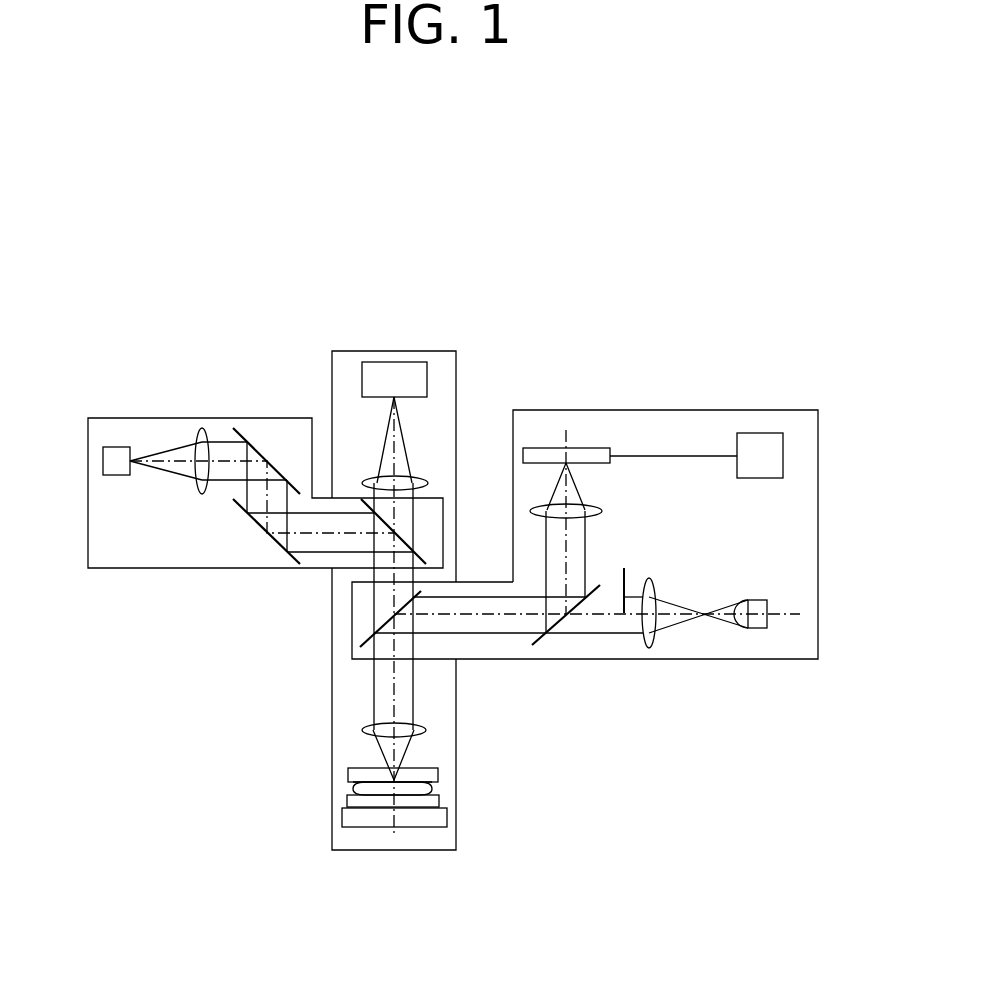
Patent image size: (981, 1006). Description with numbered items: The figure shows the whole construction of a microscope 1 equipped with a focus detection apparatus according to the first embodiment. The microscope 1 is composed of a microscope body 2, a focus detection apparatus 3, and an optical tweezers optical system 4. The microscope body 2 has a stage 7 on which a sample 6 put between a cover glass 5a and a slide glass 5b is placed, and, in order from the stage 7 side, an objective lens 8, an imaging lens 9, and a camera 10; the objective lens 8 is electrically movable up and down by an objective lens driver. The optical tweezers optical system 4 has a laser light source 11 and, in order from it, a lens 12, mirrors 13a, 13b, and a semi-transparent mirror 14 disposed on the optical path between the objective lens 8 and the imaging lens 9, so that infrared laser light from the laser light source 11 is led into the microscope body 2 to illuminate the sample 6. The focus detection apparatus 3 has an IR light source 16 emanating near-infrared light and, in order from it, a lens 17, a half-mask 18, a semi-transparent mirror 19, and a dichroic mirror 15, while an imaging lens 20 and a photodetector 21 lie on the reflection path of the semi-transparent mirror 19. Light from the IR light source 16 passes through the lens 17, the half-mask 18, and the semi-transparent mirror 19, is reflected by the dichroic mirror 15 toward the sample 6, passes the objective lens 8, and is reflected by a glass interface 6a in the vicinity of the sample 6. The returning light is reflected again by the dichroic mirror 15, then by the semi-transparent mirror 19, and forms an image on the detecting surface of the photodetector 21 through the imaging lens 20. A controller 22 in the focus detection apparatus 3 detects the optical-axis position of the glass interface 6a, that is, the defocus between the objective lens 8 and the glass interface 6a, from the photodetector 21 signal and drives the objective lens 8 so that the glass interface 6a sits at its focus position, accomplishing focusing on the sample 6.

The microscope 1 is at (728, 288).
The microscope body 2 is at (372, 342).
The focus detection apparatus 3 is at (655, 392).
The optical tweezers optical system 4 is at (125, 583).
The cover glass 5a is at (353, 773).
The slide glass 5b is at (353, 797).
The sample 6 is at (417, 789).
The glass interface 6a is at (417, 780).
The stage 7 is at (435, 818).
The objective lens 8 is at (362, 733).
The imaging lens 9 is at (417, 477).
The camera 10 is at (410, 362).
The laser light source 11 is at (120, 447).
The lens 12 is at (202, 428).
The mirror 13a is at (258, 452).
The mirror 13b is at (255, 522).
The semi-transparent mirror 14 is at (418, 553).
The dichroic mirror 15 is at (360, 640).
The IR light source 16 is at (758, 629).
The lens 17 is at (655, 642).
The half-mask 18 is at (623, 605).
The semi-transparent mirror 19 is at (540, 640).
The imaging lens 20 is at (533, 508).
The photodetector 21 is at (597, 448).
The controller 22 is at (757, 443).